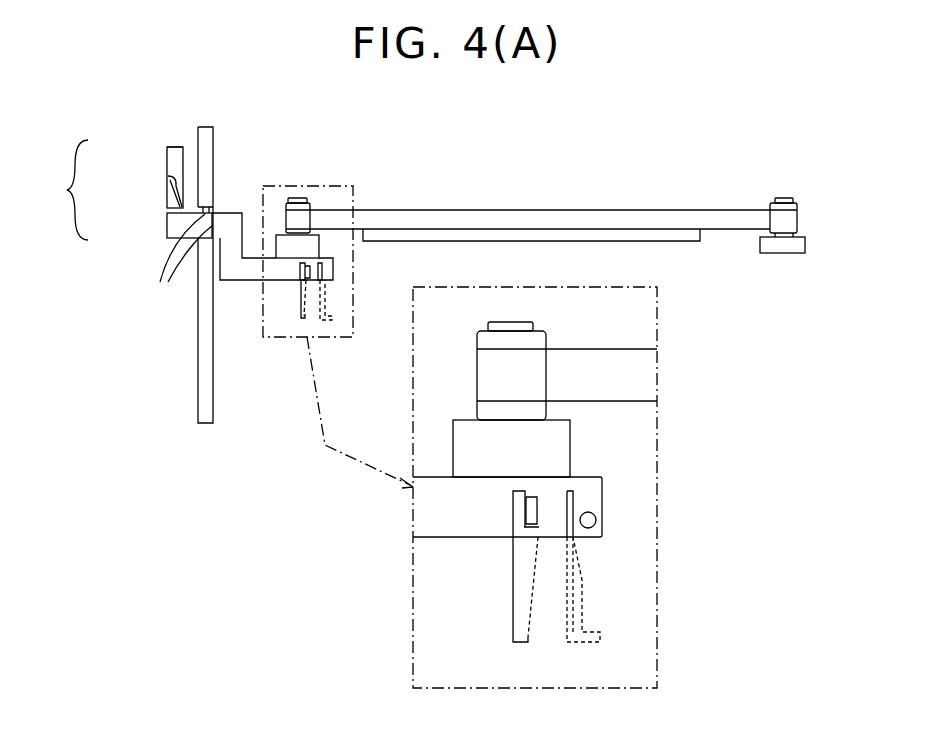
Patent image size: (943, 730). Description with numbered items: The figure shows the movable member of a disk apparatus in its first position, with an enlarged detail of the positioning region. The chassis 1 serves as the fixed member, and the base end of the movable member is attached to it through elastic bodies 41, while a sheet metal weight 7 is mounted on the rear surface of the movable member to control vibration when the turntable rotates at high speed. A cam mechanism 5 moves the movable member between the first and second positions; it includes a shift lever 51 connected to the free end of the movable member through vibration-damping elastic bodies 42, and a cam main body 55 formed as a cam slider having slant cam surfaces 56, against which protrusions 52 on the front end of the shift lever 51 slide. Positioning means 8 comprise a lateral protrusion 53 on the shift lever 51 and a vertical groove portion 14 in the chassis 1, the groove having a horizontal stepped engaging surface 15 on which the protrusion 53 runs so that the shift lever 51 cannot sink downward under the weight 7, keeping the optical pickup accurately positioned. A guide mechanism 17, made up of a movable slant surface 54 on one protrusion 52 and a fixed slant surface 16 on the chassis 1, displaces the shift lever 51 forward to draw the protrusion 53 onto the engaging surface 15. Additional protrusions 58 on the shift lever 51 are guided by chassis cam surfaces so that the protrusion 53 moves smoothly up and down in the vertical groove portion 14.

The chassis 1 is at (177, 147).
The cam mechanism 5 is at (166, 320).
The sheet metal weight 7 is at (700, 242).
The positioning means 8 is at (294, 325).
The vertical groove portion 14 is at (513, 632).
The engaging surface 15 is at (513, 515).
The fixed slant surface 16 is at (167, 203).
The guide mechanism 17 is at (62, 203).
The elastic bodies 41 is at (797, 203).
The elastic bodies 42 is at (308, 202).
The shift lever 51 is at (237, 282).
The protrusions 52 is at (167, 230).
The lateral protrusion 53 is at (513, 497).
The movable slant surface 54 is at (168, 178).
The cam main body 55 is at (198, 410).
The slant cam surfaces 56 is at (176, 260).
The additional protrusions 58 is at (597, 520).